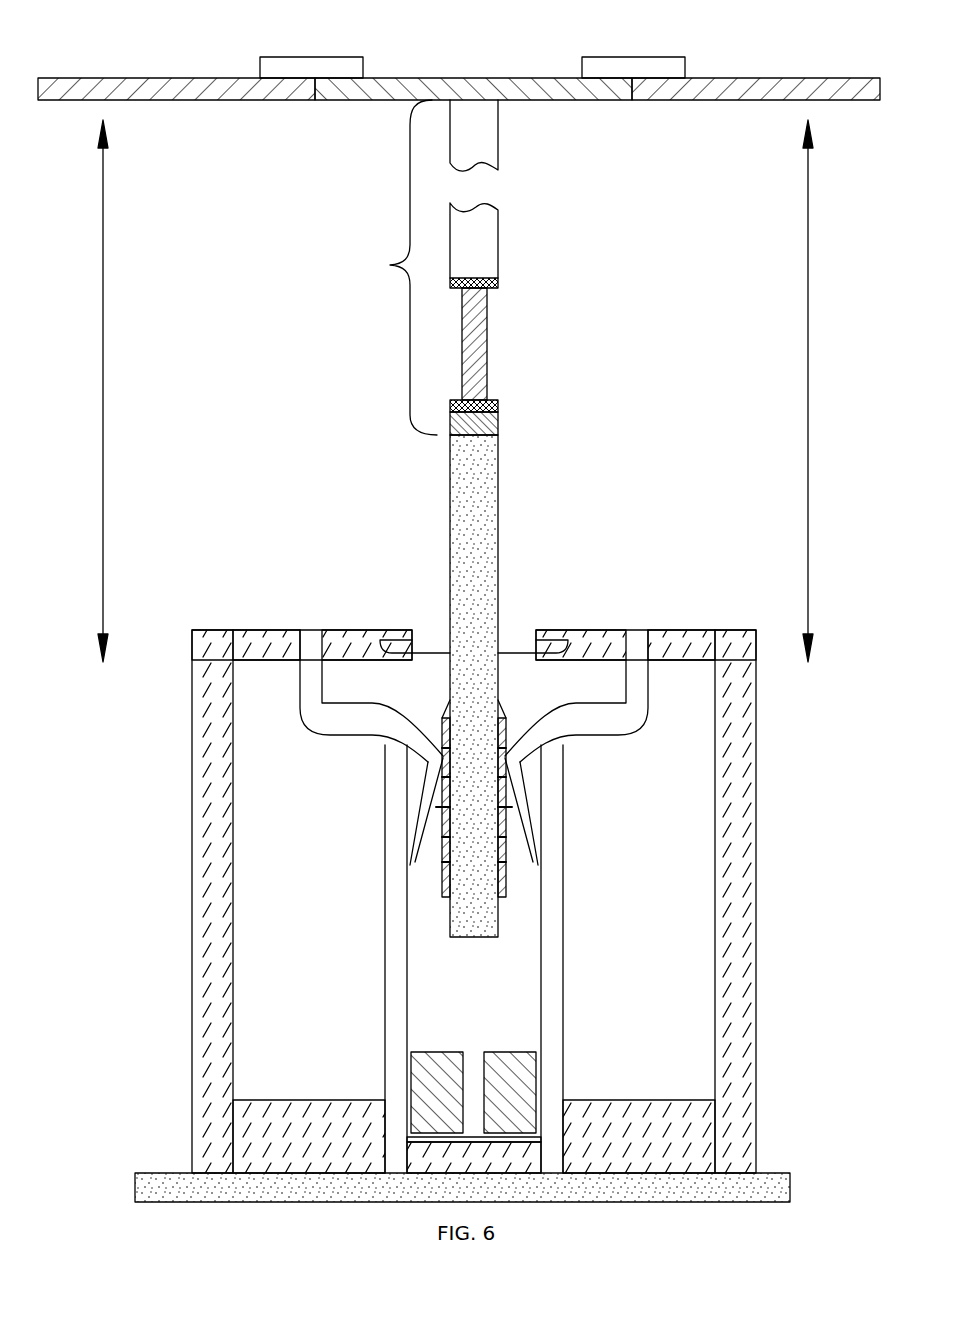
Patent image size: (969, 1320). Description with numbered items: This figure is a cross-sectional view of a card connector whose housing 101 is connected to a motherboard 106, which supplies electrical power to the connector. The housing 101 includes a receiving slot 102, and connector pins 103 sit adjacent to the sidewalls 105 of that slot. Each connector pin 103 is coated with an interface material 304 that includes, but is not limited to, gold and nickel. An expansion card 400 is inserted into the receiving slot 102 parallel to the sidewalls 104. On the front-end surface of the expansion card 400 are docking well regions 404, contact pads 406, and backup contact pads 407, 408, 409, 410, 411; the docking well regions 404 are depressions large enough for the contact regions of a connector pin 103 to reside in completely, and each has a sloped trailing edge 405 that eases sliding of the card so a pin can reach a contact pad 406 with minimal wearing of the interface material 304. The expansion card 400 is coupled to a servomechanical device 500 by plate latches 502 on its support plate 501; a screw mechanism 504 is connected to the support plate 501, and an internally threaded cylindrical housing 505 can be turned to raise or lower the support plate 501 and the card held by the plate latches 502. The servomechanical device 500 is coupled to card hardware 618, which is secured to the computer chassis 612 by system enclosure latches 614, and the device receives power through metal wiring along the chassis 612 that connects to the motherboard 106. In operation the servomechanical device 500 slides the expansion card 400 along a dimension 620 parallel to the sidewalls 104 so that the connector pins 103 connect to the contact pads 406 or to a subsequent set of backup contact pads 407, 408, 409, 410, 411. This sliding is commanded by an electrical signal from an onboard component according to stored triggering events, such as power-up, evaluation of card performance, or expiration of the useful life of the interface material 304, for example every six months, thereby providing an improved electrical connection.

The housing 101 is at (205, 845).
The receiving slot 102 is at (420, 628).
The connector pins 103 is at (442, 779).
The sidewalls 104 is at (380, 642).
The sidewalls 105 is at (425, 1071).
The motherboard 106 is at (790, 1192).
The interface material 304 is at (442, 830).
The expansion card 400 is at (494, 712).
The docking well regions 404 is at (392, 650).
The trailing edge 405 is at (443, 705).
The contact pads 406 is at (442, 740).
The backup contact pad 407 is at (412, 772).
The backup contact pad 408 is at (442, 806).
The backup contact pad 409 is at (442, 857).
The backup contact pad 410 is at (442, 881).
The backup contact pad 411 is at (442, 905).
The servomechanical device 500 is at (390, 265).
The support plate 501 is at (498, 404).
The plate latches 502 is at (498, 428).
The screw mechanism 504 is at (487, 345).
The internally threaded cylindrical housing 505 is at (498, 282).
The computer chassis 612 is at (102, 90).
The system enclosure latches 614 is at (312, 57).
The card hardware 618 is at (458, 88).
The dimension 620 is at (103, 345).